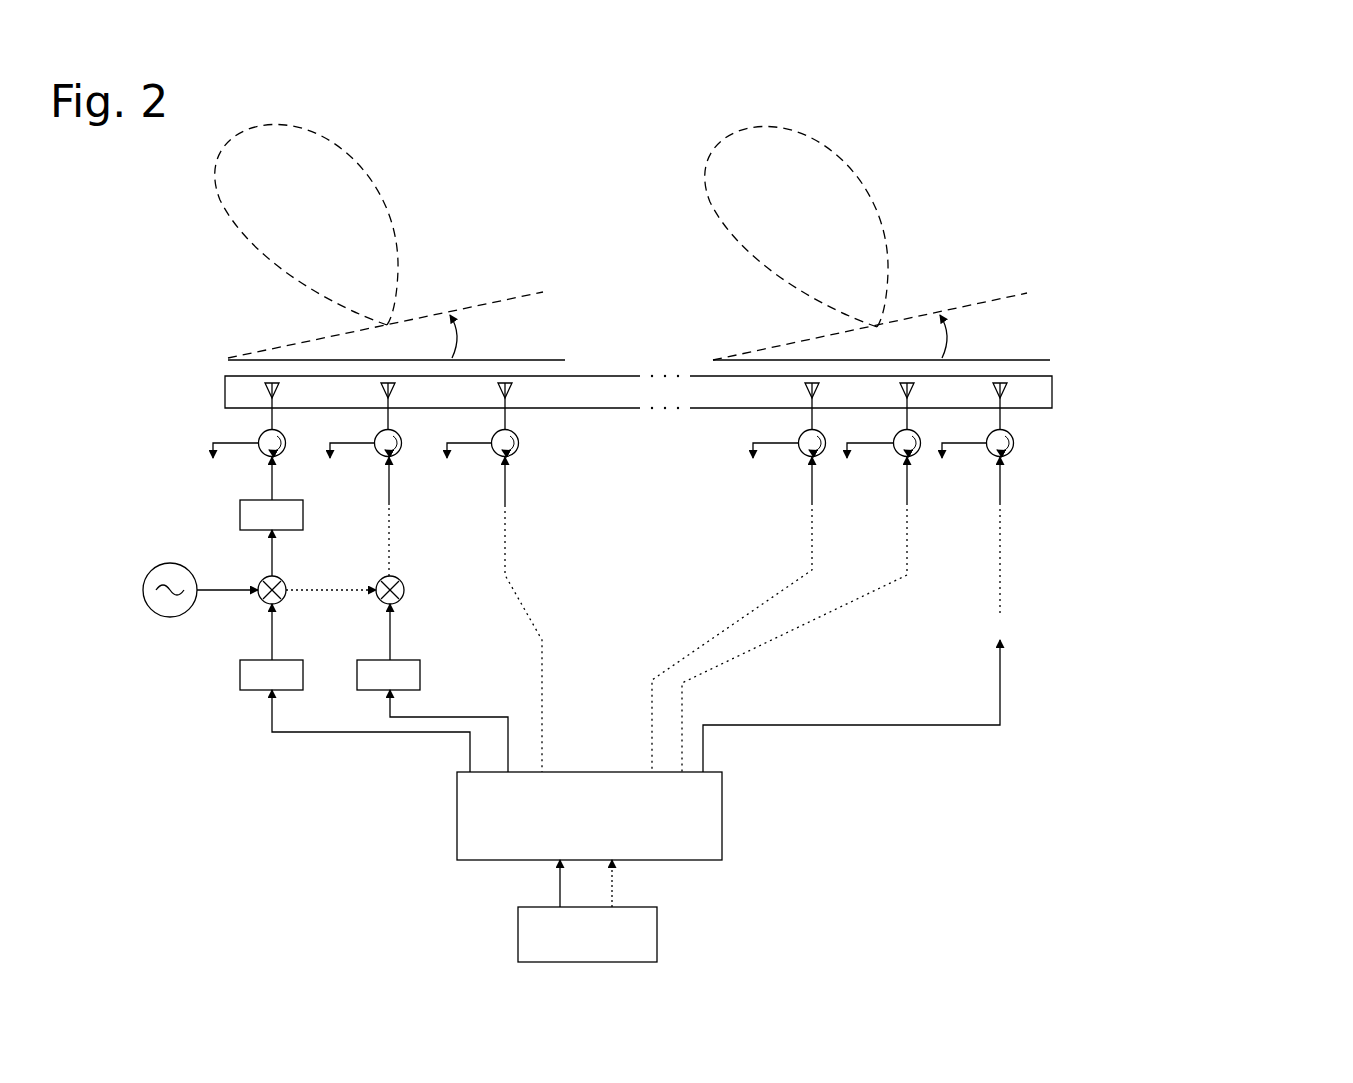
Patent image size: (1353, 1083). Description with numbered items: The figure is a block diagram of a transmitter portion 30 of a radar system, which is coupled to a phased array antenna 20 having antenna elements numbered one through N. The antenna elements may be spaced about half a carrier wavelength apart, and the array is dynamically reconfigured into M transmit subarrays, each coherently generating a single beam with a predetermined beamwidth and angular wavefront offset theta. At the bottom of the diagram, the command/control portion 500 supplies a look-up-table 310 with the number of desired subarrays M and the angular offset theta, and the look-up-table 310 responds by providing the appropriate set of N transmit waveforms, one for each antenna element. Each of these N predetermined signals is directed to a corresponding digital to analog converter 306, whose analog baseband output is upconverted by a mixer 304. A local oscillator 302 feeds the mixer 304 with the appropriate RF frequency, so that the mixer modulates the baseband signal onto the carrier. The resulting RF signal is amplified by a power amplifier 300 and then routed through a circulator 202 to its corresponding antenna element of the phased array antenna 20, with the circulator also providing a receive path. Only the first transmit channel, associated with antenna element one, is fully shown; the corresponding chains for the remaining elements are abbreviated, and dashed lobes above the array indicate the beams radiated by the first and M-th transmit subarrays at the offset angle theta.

The transmitter portion 30 is at (1286, 230).
The phased array antenna 20 is at (1052, 393).
The circulator 202 is at (286, 442).
The power amplifier 300 is at (238, 512).
The local oscillator 302 is at (143, 592).
The mixer 304 is at (373, 583).
The digital to analog converter 306 is at (238, 680).
The look-up-table 310 is at (722, 822).
The command/control portion 500 is at (657, 932).